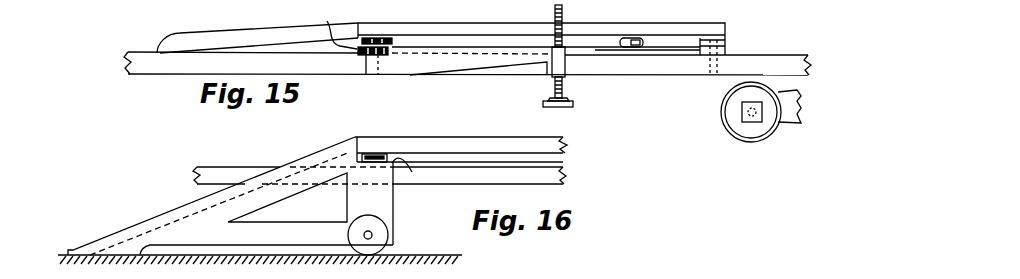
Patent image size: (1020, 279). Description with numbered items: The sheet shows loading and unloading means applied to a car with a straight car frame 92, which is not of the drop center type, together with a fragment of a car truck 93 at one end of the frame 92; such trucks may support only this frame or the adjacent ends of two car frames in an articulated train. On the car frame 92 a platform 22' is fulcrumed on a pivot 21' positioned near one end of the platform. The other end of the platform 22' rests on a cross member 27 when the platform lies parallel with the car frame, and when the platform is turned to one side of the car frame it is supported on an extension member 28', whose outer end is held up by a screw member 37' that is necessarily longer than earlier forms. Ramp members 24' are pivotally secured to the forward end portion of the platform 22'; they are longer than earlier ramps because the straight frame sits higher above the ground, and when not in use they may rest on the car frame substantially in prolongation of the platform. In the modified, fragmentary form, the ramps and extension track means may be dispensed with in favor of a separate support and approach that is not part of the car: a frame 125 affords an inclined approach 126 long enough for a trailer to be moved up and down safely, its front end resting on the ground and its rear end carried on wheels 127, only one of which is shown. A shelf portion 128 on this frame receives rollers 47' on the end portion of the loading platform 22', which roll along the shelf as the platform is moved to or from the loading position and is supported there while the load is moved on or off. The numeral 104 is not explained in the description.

In FIG. 15, the beam 92 is at (689, 72).
In FIG. 16, the beam 92 is at (218, 170).
In FIG. 15, the ramp 24' is at (257, 28).
In FIG. 15, the strap 27 is at (329, 26).
In FIG. 15, the board 22' is at (541, 29).
In FIG. 16, the board 22' is at (477, 156).
In FIG. 15, the bracket 47' is at (385, 38).
In FIG. 16, the bracket 47' is at (373, 170).
In FIG. 15, the end block 21' is at (732, 45).
In FIG. 15, the wedge 28' is at (478, 82).
In FIG. 15, the jack 37' is at (576, 56).
In FIG. 15, the wheel hook 93 is at (775, 130).
In FIG. 16, the inclined plank 126 is at (166, 217).
In FIG. 16, the brace 125 is at (310, 229).
In FIG. 16, the wheel 127 is at (369, 216).
In FIG. 16, the hook 128 is at (420, 172).
In FIG. 16, the support 104 is at (461, 273).